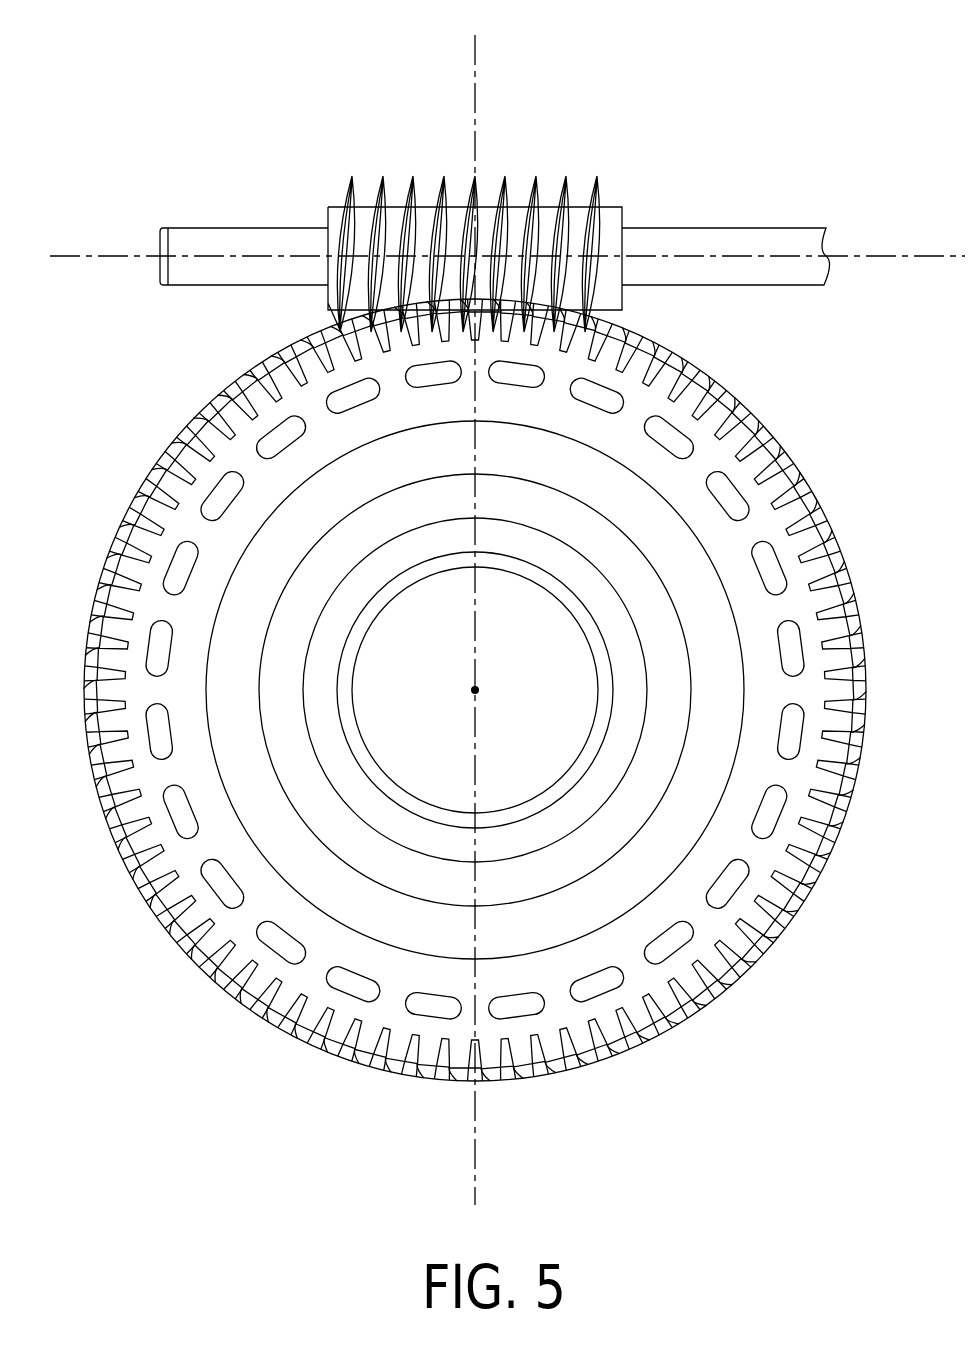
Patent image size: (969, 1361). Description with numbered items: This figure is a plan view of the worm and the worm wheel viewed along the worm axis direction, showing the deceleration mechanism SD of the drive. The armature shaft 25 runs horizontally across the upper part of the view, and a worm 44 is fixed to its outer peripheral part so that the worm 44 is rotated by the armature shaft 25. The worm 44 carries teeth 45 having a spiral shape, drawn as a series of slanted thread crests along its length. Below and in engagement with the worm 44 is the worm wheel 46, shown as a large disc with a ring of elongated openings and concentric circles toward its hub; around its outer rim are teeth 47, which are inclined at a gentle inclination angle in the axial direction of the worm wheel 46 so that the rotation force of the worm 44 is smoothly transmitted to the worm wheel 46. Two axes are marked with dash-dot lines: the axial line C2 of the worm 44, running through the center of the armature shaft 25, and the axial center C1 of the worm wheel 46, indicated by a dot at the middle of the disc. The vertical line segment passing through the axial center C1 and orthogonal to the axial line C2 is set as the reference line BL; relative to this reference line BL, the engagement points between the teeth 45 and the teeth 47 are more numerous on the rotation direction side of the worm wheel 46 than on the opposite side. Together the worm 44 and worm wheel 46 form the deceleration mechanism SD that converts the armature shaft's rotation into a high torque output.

The armature shaft 25 is at (732, 240).
The worm 44 is at (500, 204).
The teeth 45 is at (352, 180).
The worm wheel 46 is at (475, 736).
The teeth 47 is at (768, 425).
The deceleration mechanism SD is at (292, 317).
The reference line BL is at (475, 87).
The axial center C1 is at (479, 693).
The axial line C2 is at (80, 250).